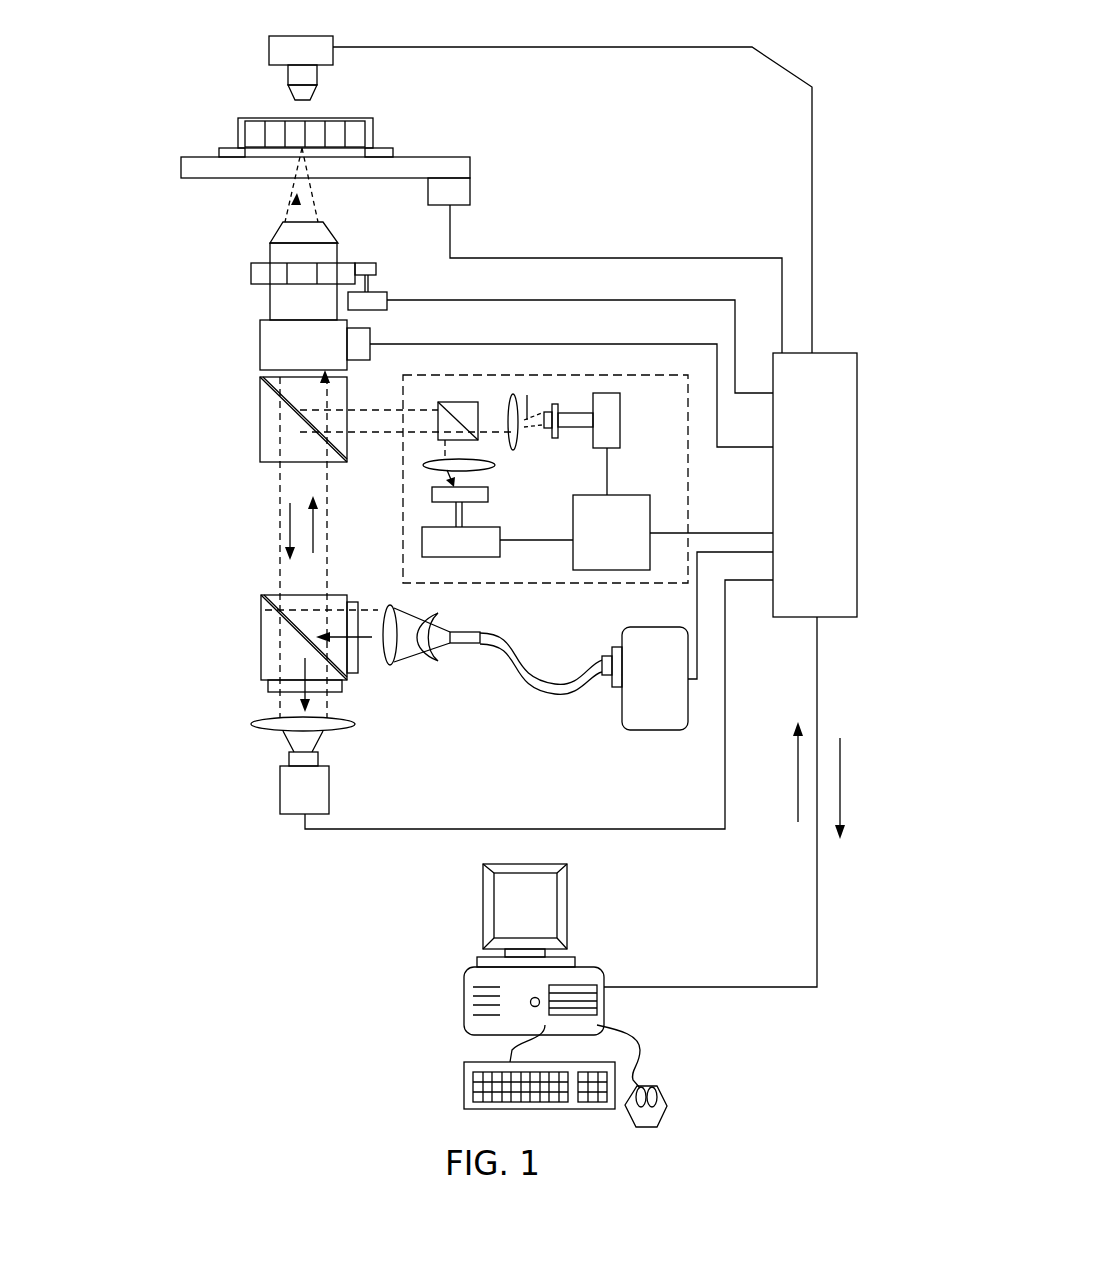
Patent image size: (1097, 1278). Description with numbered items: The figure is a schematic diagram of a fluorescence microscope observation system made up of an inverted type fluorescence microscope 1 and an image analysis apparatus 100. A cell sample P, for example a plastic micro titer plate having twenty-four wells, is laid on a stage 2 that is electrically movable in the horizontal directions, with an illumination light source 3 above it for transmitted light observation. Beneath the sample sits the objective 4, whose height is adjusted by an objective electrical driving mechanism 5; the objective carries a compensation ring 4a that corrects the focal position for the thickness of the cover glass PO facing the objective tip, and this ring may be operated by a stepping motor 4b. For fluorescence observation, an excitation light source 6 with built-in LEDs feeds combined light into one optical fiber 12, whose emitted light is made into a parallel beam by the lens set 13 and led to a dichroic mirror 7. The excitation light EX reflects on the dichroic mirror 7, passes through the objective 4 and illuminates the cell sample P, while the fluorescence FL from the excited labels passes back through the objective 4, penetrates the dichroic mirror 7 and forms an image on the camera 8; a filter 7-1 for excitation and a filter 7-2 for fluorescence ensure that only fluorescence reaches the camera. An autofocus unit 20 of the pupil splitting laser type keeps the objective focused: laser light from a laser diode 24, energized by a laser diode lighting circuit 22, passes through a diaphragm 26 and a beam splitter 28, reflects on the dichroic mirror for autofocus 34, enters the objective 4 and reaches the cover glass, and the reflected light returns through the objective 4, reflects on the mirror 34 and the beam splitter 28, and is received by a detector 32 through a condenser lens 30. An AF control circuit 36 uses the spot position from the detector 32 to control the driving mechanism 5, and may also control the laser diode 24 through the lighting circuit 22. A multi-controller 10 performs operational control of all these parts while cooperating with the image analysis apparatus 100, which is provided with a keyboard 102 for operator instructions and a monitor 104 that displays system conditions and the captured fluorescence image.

The fluorescence microscope 1 is at (154, 97).
The illumination light source 3 is at (336, 40).
The cell sample P is at (375, 128).
The stage 2 is at (472, 161).
The cover glass PO is at (355, 158).
The objective 4 is at (268, 250).
The compensation ring 4a is at (251, 278).
The stepping motor 4b is at (388, 294).
The objective electrical driving mechanism 5 is at (293, 355).
The dichroic mirror for autofocus 34 is at (277, 386).
The autofocus unit 20 is at (665, 471).
The laser diode lighting circuit 22 is at (612, 393).
The beam splitter 28 is at (478, 403).
The diaphragm 26 is at (528, 404).
The laser diode 24 is at (562, 433).
The condenser lens 30 is at (488, 468).
The detector 32 is at (432, 493).
The AF control circuit 36 is at (620, 563).
The multi-controller 10 is at (824, 545).
The fluorescence FL is at (288, 520).
The excitation light EX is at (342, 637).
The dichroic mirror 7 is at (265, 598).
The filter for excitation 7-1 is at (352, 674).
The filter for fluorescence 7-2 is at (268, 686).
The lens set 13 is at (458, 665).
The optical fiber 12 is at (557, 694).
The excitation light source 6 is at (639, 718).
The camera 8 is at (330, 790).
The monitor 104 is at (570, 914).
The image analysis apparatus 100 is at (464, 996).
The keyboard 102 is at (464, 1084).